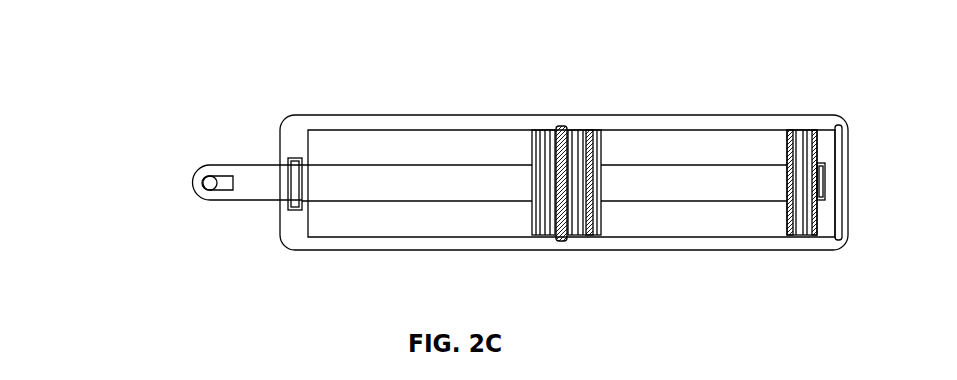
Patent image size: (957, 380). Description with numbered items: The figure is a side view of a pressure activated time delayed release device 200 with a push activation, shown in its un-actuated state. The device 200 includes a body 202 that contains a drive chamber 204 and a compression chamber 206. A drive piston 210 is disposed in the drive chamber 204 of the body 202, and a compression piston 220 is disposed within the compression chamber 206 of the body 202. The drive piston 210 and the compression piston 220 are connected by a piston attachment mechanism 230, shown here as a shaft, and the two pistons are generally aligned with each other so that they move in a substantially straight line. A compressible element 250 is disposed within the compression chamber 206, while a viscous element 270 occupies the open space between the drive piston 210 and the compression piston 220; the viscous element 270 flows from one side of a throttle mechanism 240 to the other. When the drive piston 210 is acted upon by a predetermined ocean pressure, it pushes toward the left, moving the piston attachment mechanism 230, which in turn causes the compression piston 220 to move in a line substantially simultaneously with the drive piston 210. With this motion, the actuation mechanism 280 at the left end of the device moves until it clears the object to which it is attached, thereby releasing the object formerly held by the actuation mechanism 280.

The pressure activated time delayed release device 200 is at (137, 50).
The body 202 is at (333, 252).
The drive chamber 204 is at (657, 152).
The compression chamber 206 is at (343, 147).
The drive piston 210 is at (800, 125).
The compression piston 220 is at (547, 125).
The piston attachment mechanism 230 is at (640, 202).
The throttle mechanism 240 is at (590, 142).
The compressible element 250 is at (437, 158).
The viscous element 270 is at (727, 228).
The actuation mechanism 280 is at (247, 163).